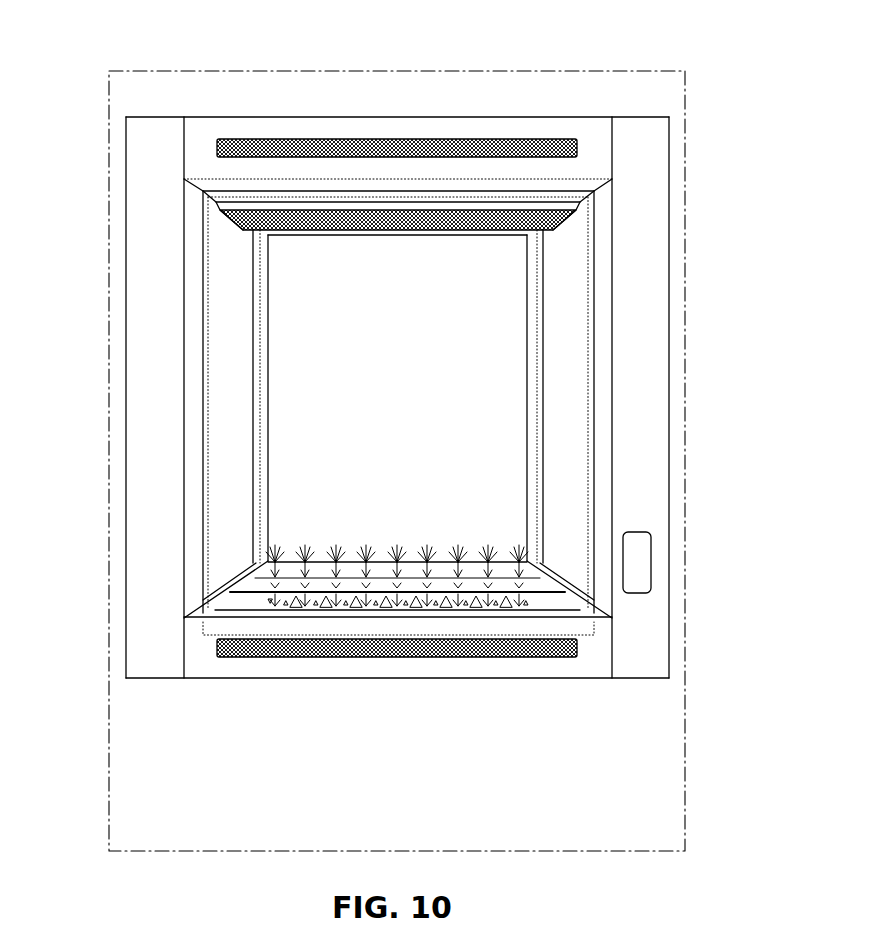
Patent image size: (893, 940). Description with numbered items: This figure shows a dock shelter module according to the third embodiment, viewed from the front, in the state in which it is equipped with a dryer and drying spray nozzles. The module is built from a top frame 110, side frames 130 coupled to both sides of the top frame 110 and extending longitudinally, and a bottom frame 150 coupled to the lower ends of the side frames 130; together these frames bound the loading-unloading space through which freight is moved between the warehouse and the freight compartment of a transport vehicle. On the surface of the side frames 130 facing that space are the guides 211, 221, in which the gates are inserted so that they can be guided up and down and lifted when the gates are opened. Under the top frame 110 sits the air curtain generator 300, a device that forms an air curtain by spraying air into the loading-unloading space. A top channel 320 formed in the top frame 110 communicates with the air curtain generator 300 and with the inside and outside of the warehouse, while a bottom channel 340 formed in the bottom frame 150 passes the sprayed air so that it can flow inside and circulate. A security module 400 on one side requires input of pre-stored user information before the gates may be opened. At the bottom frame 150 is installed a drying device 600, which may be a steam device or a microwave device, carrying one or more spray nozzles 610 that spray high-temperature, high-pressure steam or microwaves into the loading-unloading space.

The top frame 110 is at (553, 130).
The side frames 130 is at (150, 270).
The bottom frame 150 is at (600, 647).
The guide 211 is at (205, 390).
The guide 221 is at (253, 360).
The air curtain generator 300 is at (545, 243).
The top channel 320 is at (443, 145).
The bottom channel 340 is at (537, 650).
The security module 400 is at (640, 563).
The drying device 600 is at (203, 628).
The spray nozzles 610 is at (213, 587).